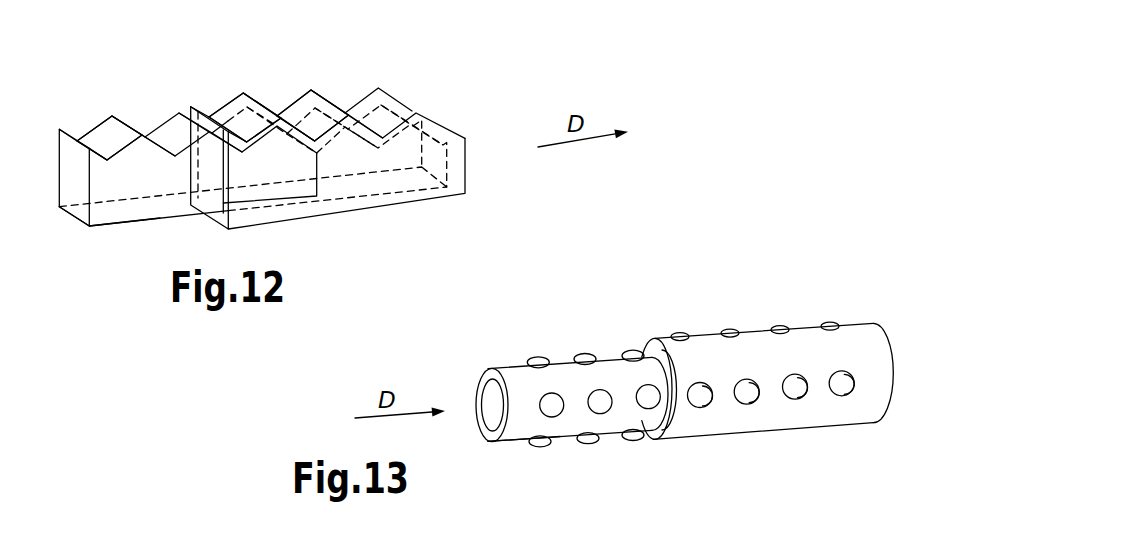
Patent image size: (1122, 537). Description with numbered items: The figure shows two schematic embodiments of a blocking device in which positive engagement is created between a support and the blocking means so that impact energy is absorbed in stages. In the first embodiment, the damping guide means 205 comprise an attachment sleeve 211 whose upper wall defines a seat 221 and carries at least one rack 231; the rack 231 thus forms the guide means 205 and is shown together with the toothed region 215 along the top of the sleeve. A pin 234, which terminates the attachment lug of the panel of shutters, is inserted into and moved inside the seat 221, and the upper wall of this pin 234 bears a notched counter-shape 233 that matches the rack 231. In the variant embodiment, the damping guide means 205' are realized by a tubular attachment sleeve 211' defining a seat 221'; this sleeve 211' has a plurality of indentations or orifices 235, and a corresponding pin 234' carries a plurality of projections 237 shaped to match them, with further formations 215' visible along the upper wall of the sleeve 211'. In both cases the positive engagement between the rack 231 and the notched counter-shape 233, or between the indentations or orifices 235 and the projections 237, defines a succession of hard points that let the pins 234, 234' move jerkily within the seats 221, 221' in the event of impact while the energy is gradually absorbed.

In FIG. 12, the damping guide means 205 is at (305, 170).
In FIG. 12, the attachment sleeve 211 is at (320, 157).
In FIG. 12, the teeth of outer member 215 is at (228, 94).
In FIG. 12, the seat 221 is at (305, 179).
In FIG. 12, the rack 231 is at (325, 95).
In FIG. 12, the notched counter-shape 233 is at (120, 116).
In FIG. 12, the pin 234 is at (109, 251).
In FIG. 13, the damping guide means 205' is at (673, 373).
In FIG. 13, the attachment sleeve 211' is at (770, 379).
In FIG. 13, the bumps of outer tube 215' is at (755, 298).
In FIG. 13, the seat 221' is at (558, 400).
In FIG. 13, the pin 234' is at (504, 472).
In FIG. 13, the indentations or orifices 235 is at (795, 388).
In FIG. 13, the projections 237 is at (585, 352).